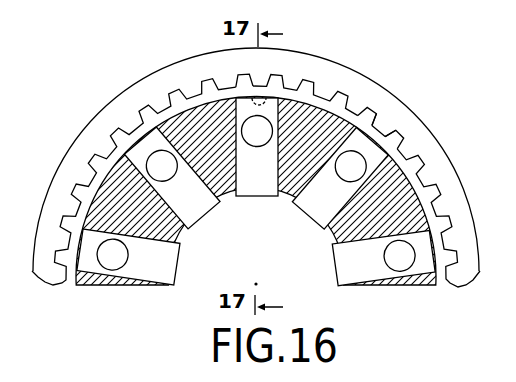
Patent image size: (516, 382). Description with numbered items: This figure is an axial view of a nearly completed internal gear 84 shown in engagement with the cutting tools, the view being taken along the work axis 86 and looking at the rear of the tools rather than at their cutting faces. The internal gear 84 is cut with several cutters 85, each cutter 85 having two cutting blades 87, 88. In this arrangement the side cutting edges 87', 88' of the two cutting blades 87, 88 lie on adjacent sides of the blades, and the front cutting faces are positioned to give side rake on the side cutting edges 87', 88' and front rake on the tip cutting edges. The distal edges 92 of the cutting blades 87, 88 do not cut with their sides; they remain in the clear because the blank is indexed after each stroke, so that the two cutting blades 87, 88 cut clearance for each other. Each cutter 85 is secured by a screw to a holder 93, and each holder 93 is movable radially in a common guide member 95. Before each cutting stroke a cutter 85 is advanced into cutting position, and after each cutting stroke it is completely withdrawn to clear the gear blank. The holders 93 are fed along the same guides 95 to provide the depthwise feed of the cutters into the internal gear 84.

The internal gear 84 is at (331, 78).
The cutter 85 is at (238, 79).
The work axis 86 is at (258, 283).
The cutting blade 87 is at (382, 97).
The side cutting edge 87' is at (406, 106).
The cutting blade 88 is at (425, 141).
The side cutting edge 88' is at (426, 117).
The distal edge 92 is at (110, 143).
The holder 93 is at (315, 207).
The guide member 95 is at (106, 188).